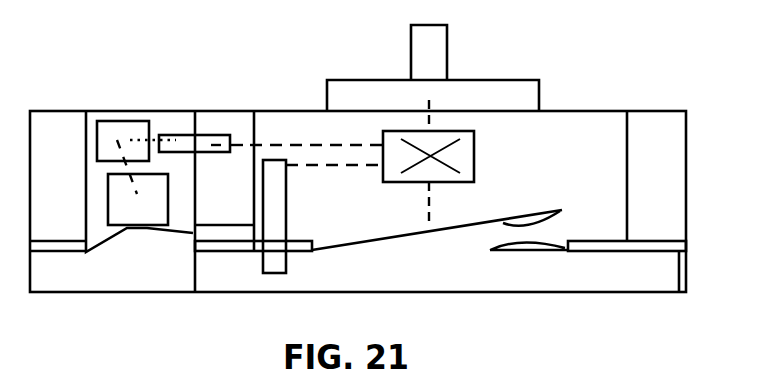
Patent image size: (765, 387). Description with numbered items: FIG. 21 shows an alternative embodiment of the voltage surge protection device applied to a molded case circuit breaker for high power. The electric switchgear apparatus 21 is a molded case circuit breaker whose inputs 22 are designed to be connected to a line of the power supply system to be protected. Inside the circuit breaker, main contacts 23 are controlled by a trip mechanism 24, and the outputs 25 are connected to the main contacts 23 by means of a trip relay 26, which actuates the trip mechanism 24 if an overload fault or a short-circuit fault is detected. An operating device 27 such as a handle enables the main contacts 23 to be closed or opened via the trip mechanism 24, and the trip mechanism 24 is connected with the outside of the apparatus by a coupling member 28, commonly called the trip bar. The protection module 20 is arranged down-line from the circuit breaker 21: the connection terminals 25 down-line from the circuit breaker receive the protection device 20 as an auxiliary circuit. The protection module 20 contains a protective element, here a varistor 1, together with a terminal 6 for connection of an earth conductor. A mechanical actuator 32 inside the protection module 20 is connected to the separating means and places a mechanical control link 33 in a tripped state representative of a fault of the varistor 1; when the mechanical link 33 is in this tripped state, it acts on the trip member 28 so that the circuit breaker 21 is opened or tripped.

The varistor 1 is at (116, 200).
The terminal 6 is at (40, 248).
The protection module 20 is at (105, 286).
The electric switchgear apparatus 21 is at (319, 120).
The inputs 22 is at (679, 294).
The main contacts 23 is at (458, 228).
The trip mechanism 24 is at (433, 147).
The outputs 25 is at (211, 252).
The trip relay 26 is at (273, 170).
The operating device 27 is at (426, 55).
The coupling member 28 is at (216, 141).
The mechanical actuator 32 is at (118, 133).
The mechanical control link 33 is at (182, 147).